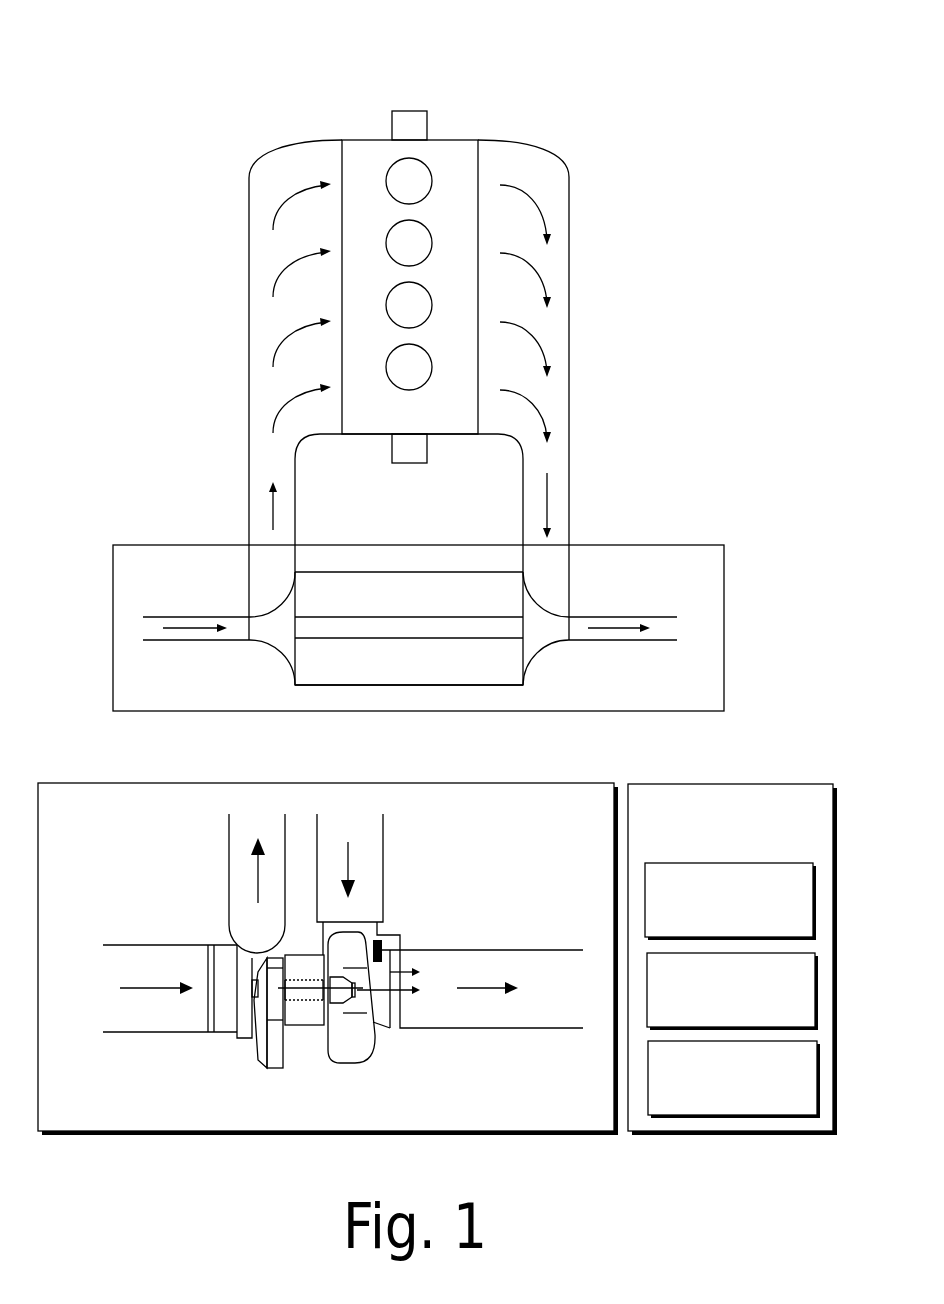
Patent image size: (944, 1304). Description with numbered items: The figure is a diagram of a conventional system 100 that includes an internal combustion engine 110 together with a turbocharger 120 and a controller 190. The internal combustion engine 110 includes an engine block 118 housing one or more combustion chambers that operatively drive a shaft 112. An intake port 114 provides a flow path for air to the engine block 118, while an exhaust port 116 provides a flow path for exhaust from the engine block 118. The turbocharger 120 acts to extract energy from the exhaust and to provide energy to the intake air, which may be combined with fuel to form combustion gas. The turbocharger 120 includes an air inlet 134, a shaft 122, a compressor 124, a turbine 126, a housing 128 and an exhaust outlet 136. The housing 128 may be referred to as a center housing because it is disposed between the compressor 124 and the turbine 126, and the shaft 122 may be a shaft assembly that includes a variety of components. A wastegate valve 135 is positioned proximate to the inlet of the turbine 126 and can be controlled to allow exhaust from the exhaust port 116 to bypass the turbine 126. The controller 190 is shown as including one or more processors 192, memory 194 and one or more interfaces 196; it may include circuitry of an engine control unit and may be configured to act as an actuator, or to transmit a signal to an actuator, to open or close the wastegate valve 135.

The system 100 is at (565, 71).
The internal combustion engine 110 is at (374, 138).
The shaft 112 is at (410, 111).
The intake port 114 is at (268, 158).
The exhaust port 116 is at (565, 168).
The engine block 118 is at (394, 427).
The turbocharger 120 is at (622, 545).
The shaft 122 is at (408, 640).
The compressor 124 is at (278, 650).
The turbine 126 is at (543, 647).
The housing 128 is at (396, 604).
The air inlet 134 is at (215, 617).
The wastegate valve 135 is at (382, 940).
The exhaust outlet 136 is at (625, 617).
The controller 190 is at (709, 853).
The processors 192 is at (710, 923).
The memory 194 is at (710, 1014).
The interfaces 196 is at (711, 1101).